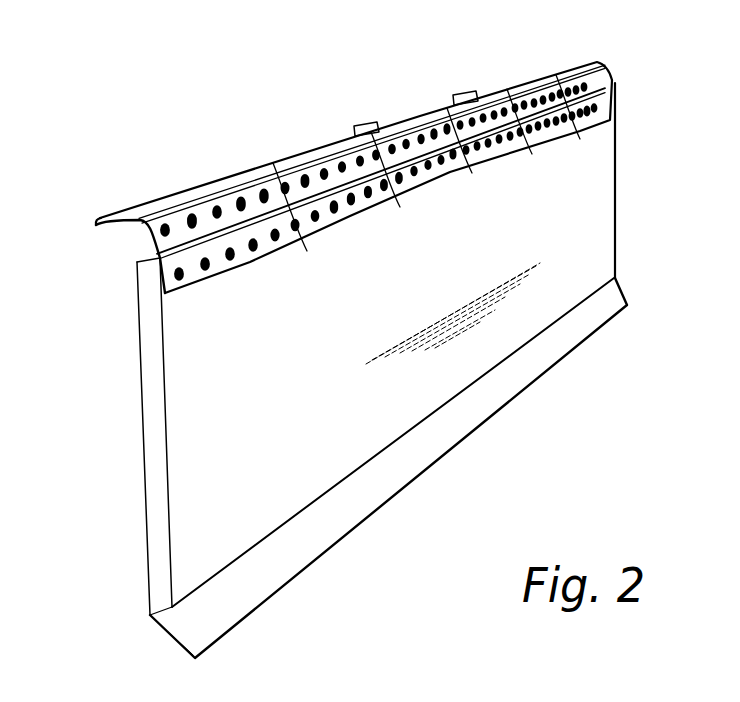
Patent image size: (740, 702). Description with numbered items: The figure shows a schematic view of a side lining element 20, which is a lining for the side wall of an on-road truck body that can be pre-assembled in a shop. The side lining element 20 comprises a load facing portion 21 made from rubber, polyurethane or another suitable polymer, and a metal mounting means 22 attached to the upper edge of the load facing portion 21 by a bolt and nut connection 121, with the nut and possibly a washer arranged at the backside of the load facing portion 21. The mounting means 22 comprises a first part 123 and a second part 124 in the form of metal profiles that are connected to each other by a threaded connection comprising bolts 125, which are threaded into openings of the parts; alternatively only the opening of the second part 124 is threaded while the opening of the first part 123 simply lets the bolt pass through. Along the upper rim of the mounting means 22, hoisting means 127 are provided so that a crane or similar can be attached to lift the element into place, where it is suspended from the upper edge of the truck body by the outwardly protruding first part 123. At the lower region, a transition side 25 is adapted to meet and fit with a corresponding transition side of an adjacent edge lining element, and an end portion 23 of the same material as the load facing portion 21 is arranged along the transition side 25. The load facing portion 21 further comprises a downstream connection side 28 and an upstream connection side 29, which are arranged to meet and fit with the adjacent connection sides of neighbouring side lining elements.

The side lining element 20 is at (385, 349).
The load facing portion 21 is at (170, 497).
The mounting means 22 is at (165, 224).
The end portion 23 is at (388, 473).
The transition side 25 is at (217, 577).
The downstream connection side 28 is at (152, 400).
The upstream connection side 29 is at (617, 213).
The bolt and nut connection 121 is at (176, 278).
The first part 123 is at (332, 150).
The second part 124 is at (335, 215).
The bolts 125 is at (153, 237).
The hoisting means 127 is at (367, 124).